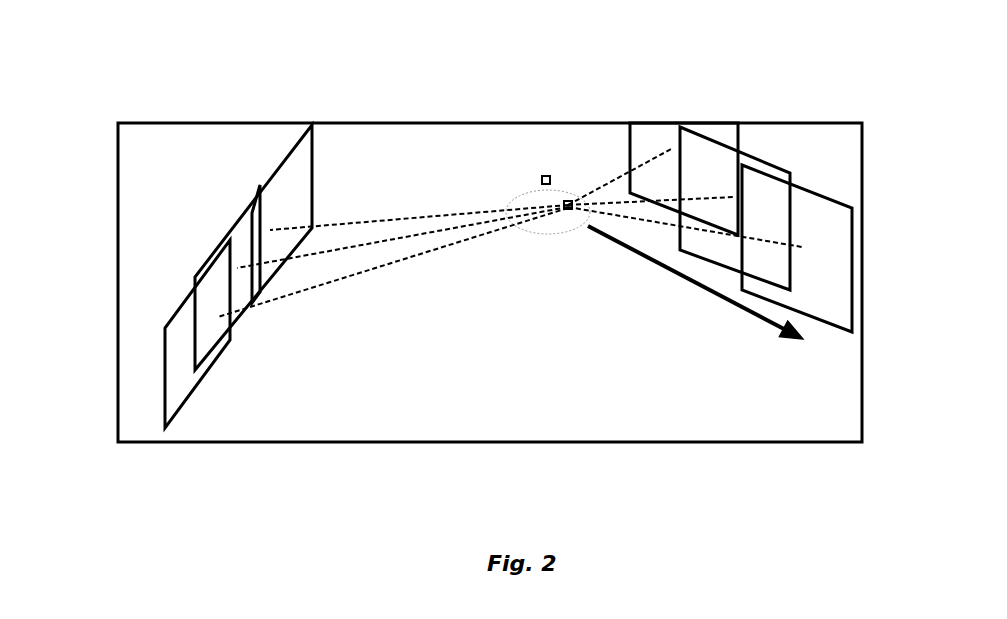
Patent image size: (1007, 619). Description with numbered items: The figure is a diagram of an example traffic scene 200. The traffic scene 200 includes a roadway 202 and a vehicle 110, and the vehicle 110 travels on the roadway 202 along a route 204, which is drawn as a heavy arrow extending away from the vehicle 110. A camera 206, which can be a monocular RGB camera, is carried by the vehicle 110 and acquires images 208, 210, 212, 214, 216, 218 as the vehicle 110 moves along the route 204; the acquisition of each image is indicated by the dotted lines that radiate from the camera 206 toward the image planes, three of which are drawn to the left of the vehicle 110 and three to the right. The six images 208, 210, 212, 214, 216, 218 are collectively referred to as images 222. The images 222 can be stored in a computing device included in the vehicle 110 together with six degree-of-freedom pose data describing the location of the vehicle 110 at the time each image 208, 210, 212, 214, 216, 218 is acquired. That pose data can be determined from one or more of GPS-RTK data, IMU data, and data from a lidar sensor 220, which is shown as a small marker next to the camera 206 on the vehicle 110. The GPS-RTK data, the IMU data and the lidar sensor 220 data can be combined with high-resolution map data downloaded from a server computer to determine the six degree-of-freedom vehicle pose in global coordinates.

The traffic scene 200 is at (250, 122).
The roadway 202 is at (535, 393).
The route 204 is at (763, 320).
The camera 206 is at (568, 200).
The image 208 is at (278, 174).
The image 210 is at (740, 132).
The image 212 is at (232, 233).
The image 214 is at (790, 173).
The image 216 is at (175, 312).
The image 218 is at (852, 228).
The lidar sensor 220 is at (546, 176).
The images 222 is at (318, 403).
The vehicle 110 is at (517, 192).